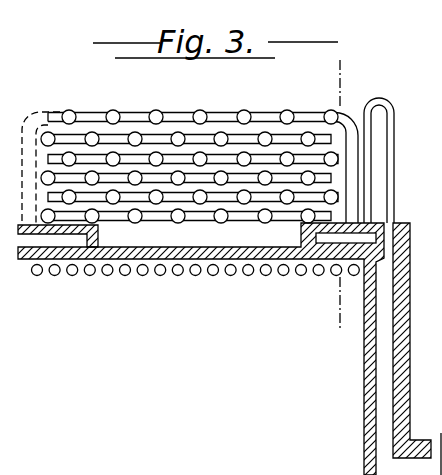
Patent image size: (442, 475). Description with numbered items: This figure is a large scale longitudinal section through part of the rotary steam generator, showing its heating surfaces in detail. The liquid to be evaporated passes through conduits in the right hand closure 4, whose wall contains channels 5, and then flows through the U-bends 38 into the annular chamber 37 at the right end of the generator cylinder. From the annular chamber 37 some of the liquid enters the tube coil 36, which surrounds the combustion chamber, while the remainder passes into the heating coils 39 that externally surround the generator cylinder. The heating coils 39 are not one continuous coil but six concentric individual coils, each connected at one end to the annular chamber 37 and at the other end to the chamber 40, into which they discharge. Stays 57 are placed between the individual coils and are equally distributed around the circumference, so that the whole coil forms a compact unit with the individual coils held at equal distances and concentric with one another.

The right hand closure 4 is at (347, 203).
The channels 5 is at (381, 317).
The tube coil 36 is at (231, 276).
The annular chamber 37 is at (356, 242).
The U-bends 38 is at (388, 137).
The heating coils 39 is at (200, 160).
The chamber 40 is at (62, 240).
The stays 57 is at (279, 143).